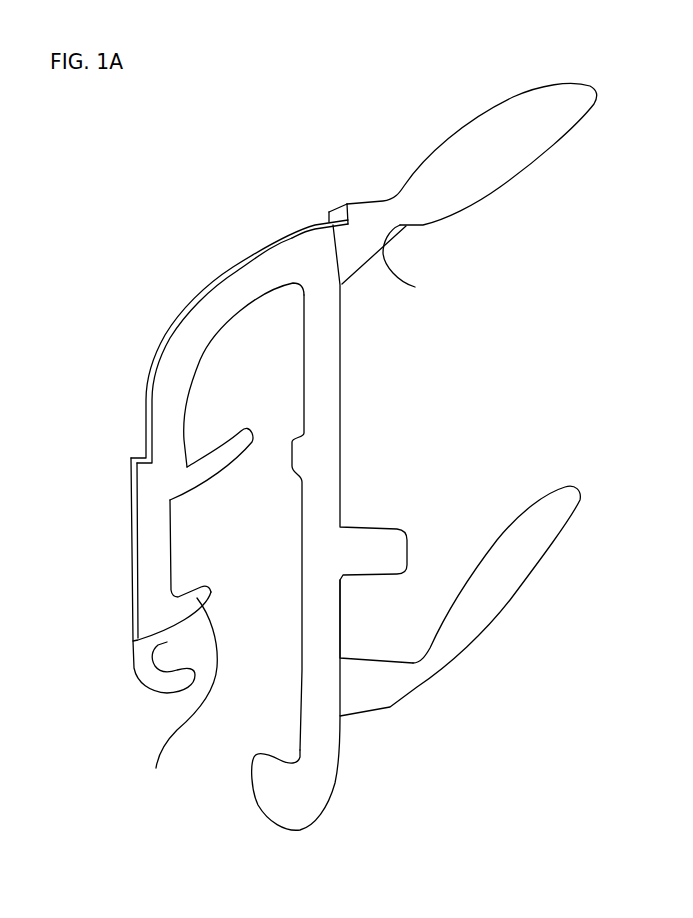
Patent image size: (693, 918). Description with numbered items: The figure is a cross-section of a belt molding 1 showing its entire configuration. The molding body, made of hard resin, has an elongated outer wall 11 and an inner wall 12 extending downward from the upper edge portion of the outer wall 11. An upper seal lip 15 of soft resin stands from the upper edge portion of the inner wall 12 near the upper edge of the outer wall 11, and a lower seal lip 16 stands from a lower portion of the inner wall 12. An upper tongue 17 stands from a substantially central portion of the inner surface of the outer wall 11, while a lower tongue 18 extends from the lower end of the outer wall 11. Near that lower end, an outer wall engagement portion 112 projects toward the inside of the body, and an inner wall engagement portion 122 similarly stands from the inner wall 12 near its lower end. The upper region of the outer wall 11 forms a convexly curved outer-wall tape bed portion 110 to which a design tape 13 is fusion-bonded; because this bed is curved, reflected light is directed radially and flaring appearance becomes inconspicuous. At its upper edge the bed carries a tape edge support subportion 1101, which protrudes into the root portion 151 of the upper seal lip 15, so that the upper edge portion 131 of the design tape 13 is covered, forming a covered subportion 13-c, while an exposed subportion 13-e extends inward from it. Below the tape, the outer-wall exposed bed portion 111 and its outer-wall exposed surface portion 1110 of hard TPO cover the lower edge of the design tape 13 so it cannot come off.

The belt molding 1 is at (190, 279).
The outer wall 11 is at (168, 362).
The outer-wall tape bed portion 110 is at (275, 257).
The outer-wall exposed bed portion 111 is at (146, 516).
The outer-wall exposed surface portion 1110 is at (129, 561).
The outer wall engagement portion 112 is at (173, 700).
The inner wall 12 is at (332, 386).
The inner wall engagement portion 122 is at (263, 783).
The design tape 13 is at (233, 268).
The exposed subportion 13-e is at (304, 232).
The covered subportion 13-c is at (348, 203).
The upper edge portion of the design tape 131 is at (344, 208).
The root portion of the upper seal lip 151 is at (336, 212).
The tape edge support subportion 1101 is at (415, 287).
The upper seal lip 15 is at (572, 110).
The lower seal lip 16 is at (566, 516).
The upper tongue 17 is at (237, 451).
The lower tongue 18 is at (145, 672).